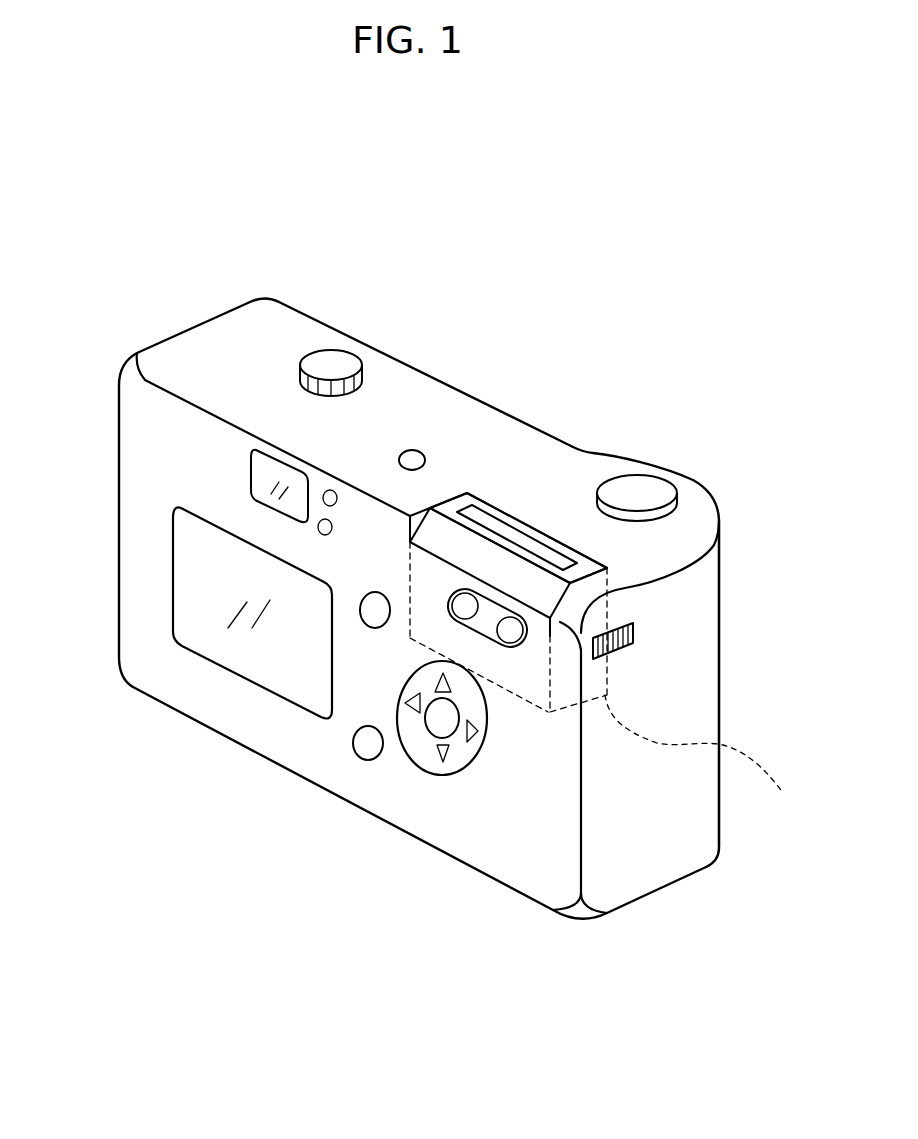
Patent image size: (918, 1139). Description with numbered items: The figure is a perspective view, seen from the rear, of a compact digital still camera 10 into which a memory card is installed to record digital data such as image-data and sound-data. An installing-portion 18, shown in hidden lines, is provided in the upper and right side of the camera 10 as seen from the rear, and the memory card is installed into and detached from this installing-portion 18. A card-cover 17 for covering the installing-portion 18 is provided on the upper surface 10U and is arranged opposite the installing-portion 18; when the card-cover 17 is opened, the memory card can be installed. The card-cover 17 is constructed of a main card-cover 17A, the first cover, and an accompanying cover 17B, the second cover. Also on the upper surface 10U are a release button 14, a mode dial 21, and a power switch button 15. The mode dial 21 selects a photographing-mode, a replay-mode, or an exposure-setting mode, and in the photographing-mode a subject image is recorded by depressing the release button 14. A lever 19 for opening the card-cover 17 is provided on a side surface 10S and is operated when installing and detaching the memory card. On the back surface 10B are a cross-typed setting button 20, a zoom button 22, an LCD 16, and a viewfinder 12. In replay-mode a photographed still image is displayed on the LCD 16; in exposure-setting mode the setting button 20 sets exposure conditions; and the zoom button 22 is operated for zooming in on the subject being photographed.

The digital camera 10 is at (136, 280).
The upper surface 10U is at (238, 340).
The back surface 10B is at (148, 422).
The side surface 10S is at (650, 852).
The viewfinder 12 is at (270, 480).
The release button 14 is at (635, 493).
The power switch button 15 is at (400, 452).
The LCD 16 is at (208, 593).
The card-cover 17 is at (450, 537).
The main card-cover 17A is at (458, 493).
The accompanying cover 17B is at (520, 537).
The installing-portion 18 is at (703, 761).
The lever 19 is at (634, 631).
The cross-typed setting button 20 is at (422, 765).
The mode dial 21 is at (331, 367).
The zoom button 22 is at (512, 642).